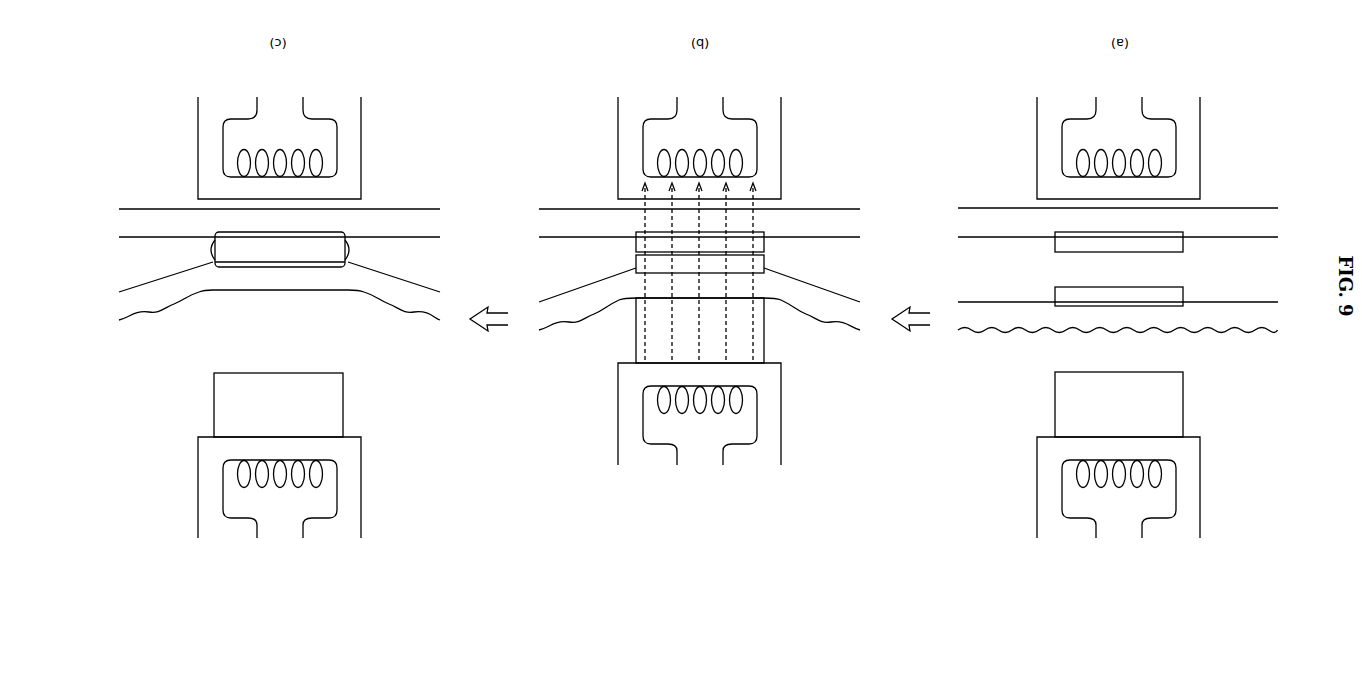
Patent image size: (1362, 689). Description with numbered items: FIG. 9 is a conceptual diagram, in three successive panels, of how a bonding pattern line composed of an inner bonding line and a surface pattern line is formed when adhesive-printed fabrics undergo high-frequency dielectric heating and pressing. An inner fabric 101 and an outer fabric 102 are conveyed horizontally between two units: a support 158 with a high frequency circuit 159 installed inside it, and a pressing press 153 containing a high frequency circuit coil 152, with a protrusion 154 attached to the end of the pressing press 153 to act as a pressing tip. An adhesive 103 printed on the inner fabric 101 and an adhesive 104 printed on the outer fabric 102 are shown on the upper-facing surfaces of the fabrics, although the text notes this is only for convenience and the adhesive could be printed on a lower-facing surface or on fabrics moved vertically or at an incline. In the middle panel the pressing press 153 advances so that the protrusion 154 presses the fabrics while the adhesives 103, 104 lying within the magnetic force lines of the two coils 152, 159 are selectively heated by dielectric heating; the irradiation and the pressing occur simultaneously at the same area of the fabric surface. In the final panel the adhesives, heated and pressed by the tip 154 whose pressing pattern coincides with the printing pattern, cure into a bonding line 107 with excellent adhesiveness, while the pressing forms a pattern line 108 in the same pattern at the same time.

The inner fabric 101 is at (1232, 214).
The outer fabric 102 is at (1237, 318).
The adhesive printed on inner fabric 103 is at (1052, 243).
The adhesive printed on outer fabric 104 is at (1052, 297).
The bonding line 107 is at (212, 250).
The pattern line 108 is at (238, 290).
The high frequency circuit coil 152 is at (1062, 500).
The pressing press 153 is at (1037, 462).
The protrusion 154 is at (1055, 408).
The support 158 is at (1037, 172).
The high frequency circuit 159 is at (1062, 143).